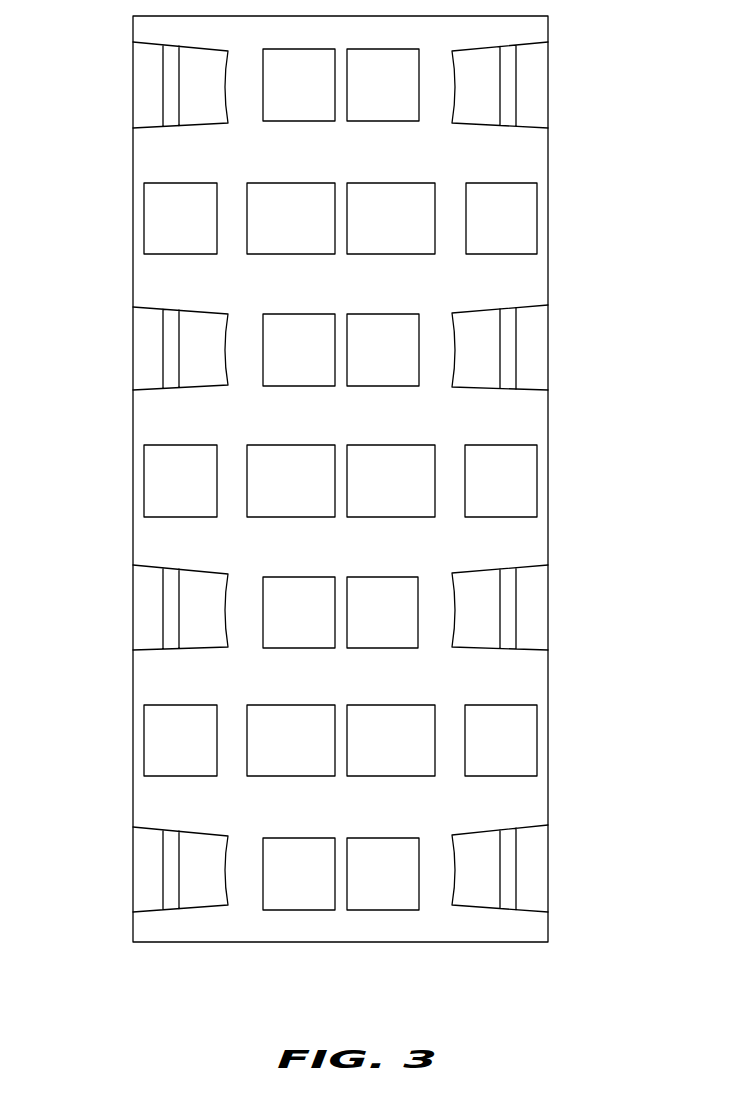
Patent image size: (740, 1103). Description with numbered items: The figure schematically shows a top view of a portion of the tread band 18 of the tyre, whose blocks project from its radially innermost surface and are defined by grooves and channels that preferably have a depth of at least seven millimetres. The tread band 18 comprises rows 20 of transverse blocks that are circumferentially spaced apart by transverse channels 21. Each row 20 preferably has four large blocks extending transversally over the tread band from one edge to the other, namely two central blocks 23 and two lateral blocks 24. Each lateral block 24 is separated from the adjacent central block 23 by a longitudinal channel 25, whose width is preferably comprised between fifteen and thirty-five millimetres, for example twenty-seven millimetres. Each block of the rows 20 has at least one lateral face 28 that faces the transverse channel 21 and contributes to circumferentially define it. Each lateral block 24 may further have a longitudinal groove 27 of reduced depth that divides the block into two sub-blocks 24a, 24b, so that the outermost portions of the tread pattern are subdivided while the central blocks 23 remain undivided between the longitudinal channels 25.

The tread band 18 is at (576, 230).
The row of transverse blocks 20 is at (166, 494).
The transverse channel 21 is at (399, 561).
The central block 23 is at (308, 386).
The lateral block 24 is at (201, 310).
The sub-block 24a is at (495, 323).
The sub-block 24b is at (538, 348).
The longitudinal channel 25 is at (242, 353).
The longitudinal groove 27 is at (508, 375).
The lateral face 28 is at (257, 776).